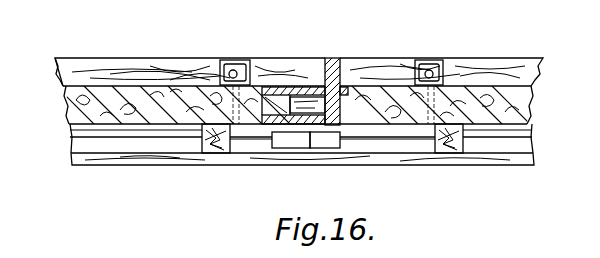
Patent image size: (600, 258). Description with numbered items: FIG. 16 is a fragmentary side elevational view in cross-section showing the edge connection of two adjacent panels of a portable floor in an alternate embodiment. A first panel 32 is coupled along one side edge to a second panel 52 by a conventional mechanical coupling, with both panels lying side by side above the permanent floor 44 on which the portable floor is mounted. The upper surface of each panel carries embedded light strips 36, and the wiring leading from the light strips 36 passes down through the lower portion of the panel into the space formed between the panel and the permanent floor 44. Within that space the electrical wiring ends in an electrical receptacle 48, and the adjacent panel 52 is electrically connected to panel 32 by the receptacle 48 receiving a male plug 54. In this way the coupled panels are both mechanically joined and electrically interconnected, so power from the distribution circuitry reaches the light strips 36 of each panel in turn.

The panel 32 is at (150, 24).
The light strip 36 is at (236, 48).
The permanent floor 44 is at (183, 158).
The electrical receptacle 48 is at (285, 142).
The panel 52 is at (495, 36).
The male plug 54 is at (325, 144).